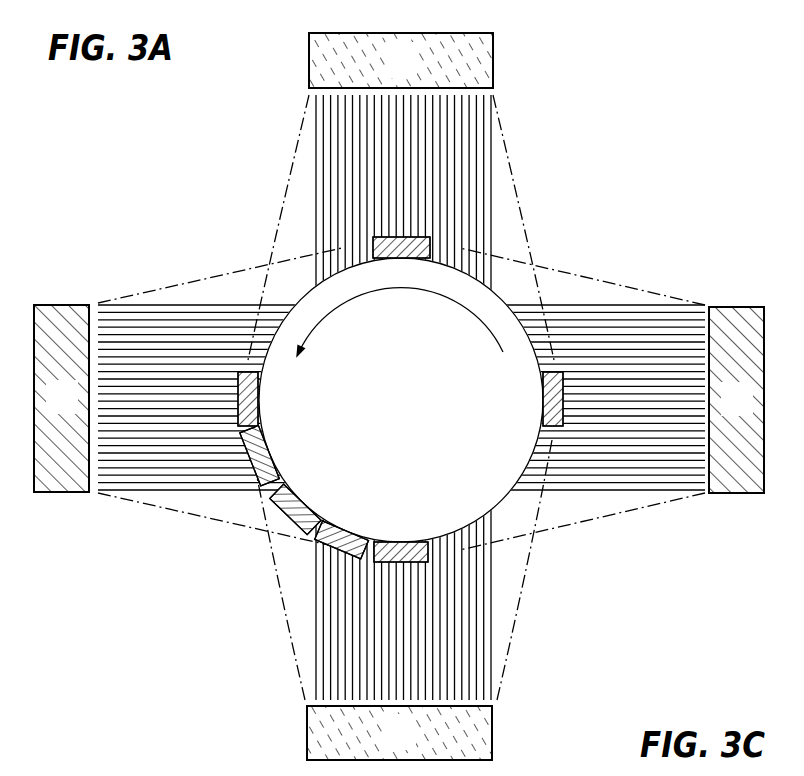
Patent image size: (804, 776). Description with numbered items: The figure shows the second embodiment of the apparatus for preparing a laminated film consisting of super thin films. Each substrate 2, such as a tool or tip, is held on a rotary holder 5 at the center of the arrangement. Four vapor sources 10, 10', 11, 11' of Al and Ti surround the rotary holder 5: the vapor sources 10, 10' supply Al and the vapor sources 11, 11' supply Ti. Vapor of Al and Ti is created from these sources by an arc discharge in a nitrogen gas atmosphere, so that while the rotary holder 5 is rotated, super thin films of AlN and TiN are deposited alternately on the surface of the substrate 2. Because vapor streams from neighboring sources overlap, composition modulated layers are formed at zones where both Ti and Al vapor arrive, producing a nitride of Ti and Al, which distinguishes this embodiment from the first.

The substrate 2 is at (403, 238).
The rotary holder 5 is at (455, 470).
The vapor source 10 is at (61, 371).
The vapor source 10' is at (736, 372).
The vapor source 11 is at (370, 60).
The vapor source 11' is at (367, 733).